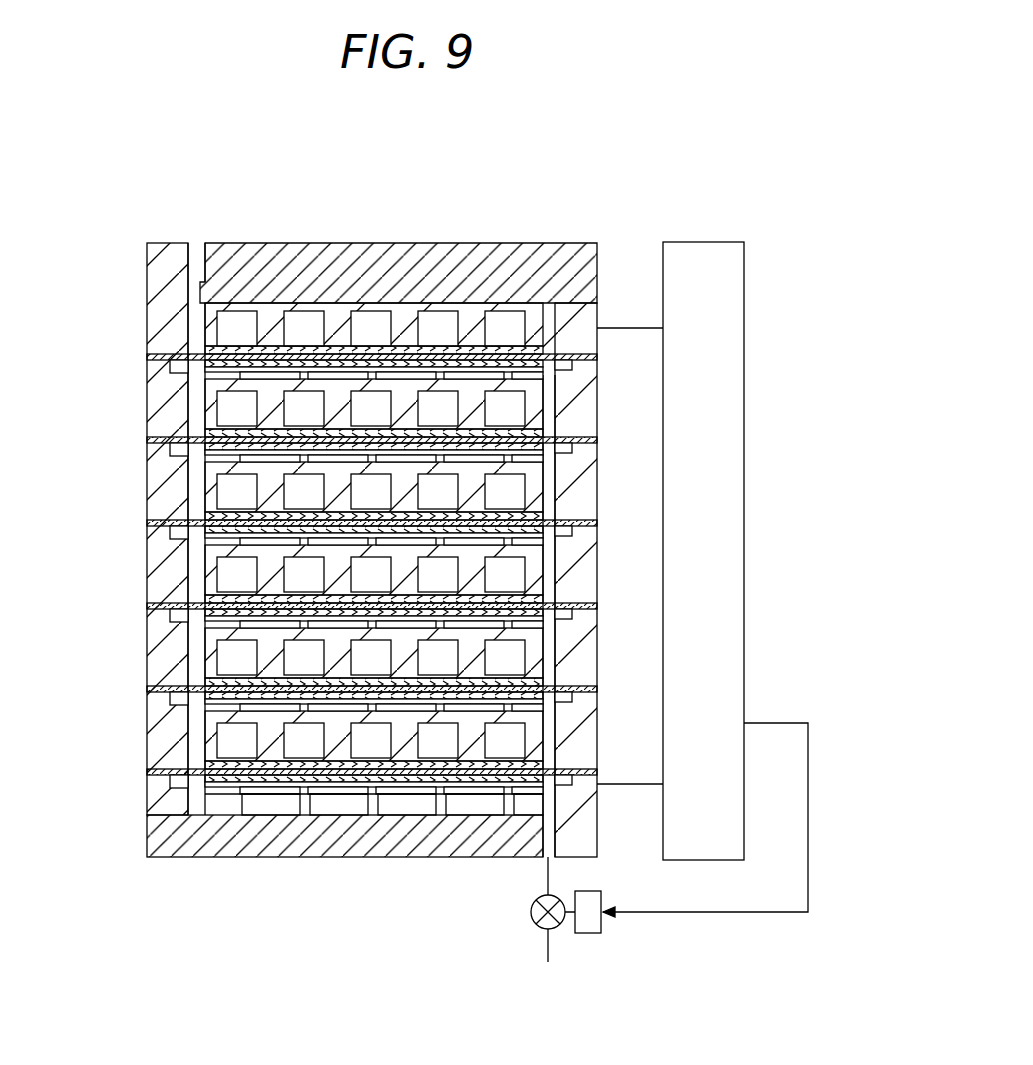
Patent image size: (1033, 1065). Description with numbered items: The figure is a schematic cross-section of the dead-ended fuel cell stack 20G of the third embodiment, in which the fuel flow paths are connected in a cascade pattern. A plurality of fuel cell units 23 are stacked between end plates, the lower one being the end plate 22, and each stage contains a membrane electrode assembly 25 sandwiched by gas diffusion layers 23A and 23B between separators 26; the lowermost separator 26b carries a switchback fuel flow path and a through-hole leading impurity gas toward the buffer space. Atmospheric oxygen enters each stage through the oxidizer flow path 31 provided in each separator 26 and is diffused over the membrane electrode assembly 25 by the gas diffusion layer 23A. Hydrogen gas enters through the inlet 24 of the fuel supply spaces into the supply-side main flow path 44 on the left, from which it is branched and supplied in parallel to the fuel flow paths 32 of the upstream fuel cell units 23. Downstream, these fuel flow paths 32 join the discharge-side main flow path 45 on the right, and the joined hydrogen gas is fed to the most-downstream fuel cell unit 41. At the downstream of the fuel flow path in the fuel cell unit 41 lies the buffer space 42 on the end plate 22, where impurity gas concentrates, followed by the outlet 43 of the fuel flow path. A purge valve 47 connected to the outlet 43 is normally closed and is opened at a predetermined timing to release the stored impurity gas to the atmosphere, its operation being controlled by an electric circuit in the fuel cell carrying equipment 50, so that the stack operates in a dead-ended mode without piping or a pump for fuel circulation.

The fuel cell stack 20G is at (540, 206).
The end plate 22 is at (308, 857).
The fuel cell unit 23 is at (88, 290).
The gas diffusion layer 23A is at (207, 352).
The gas diffusion layer 23B is at (207, 370).
The inlet of the fuel supply spaces 24 is at (195, 262).
The membrane electrode assembly 25 is at (157, 357).
The separator 26 is at (585, 400).
The separator 26b is at (265, 798).
The oxidizer flow path 31 is at (227, 330).
The fuel flow path 32 is at (227, 378).
The fuel cell unit 41 is at (88, 700).
The buffer space 42 is at (406, 810).
The outlet of the fuel flow path 43 is at (545, 860).
The supply-side main flow path 44 is at (188, 476).
The discharge-side main flow path 45 is at (548, 550).
The purge valve 47 is at (590, 936).
The fuel cell carrying equipment 50 is at (722, 242).